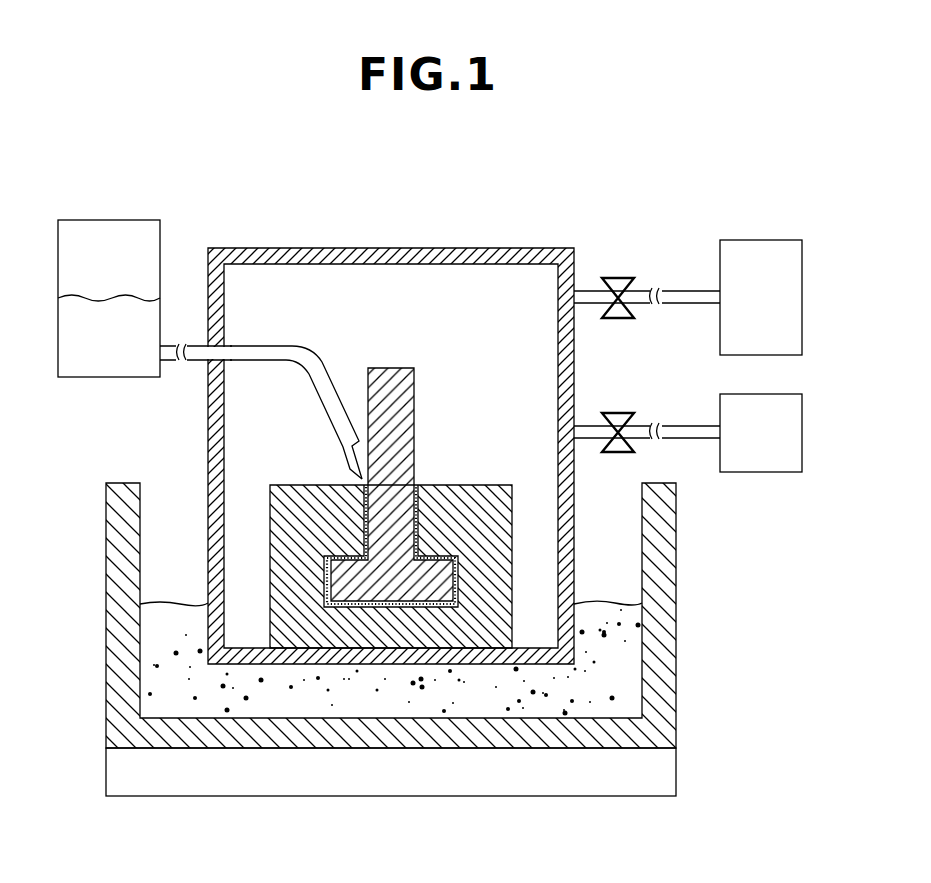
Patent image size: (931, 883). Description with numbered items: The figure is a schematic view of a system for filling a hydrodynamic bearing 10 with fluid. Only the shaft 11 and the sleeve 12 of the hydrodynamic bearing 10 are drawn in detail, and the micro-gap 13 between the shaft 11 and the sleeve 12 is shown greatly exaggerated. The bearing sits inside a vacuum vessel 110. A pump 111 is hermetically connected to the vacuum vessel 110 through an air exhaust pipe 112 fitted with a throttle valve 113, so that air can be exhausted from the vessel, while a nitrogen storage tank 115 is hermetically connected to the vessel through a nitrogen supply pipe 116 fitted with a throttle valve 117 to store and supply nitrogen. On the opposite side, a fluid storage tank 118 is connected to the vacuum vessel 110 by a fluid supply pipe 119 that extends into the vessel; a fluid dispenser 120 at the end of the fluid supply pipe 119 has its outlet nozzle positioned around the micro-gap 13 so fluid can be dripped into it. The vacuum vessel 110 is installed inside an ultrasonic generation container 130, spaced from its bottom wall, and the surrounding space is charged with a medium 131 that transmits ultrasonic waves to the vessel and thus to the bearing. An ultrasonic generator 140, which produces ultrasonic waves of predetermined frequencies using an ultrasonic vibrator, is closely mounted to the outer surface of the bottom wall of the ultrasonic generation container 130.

The hydrodynamic bearing 10 is at (396, 355).
The shaft 11 is at (403, 395).
The sleeve 12 is at (490, 495).
The micro-gap 13 is at (419, 496).
The vacuum vessel 110 is at (382, 262).
The pump 111 is at (761, 433).
The air exhaust pipe 112 is at (692, 434).
The throttle valve 113 is at (618, 428).
The nitrogen storage tank 115 is at (761, 297).
The nitrogen supply pipe 116 is at (692, 300).
The throttle valve 117 is at (618, 290).
The fluid storage tank 118 is at (109, 298).
The fluid supply pipe 119 is at (197, 353).
The fluid dispenser 120 is at (350, 461).
The ultrasonic generation container 130 is at (658, 537).
The medium 131 is at (624, 665).
The ultrasonic generator 140 is at (391, 772).